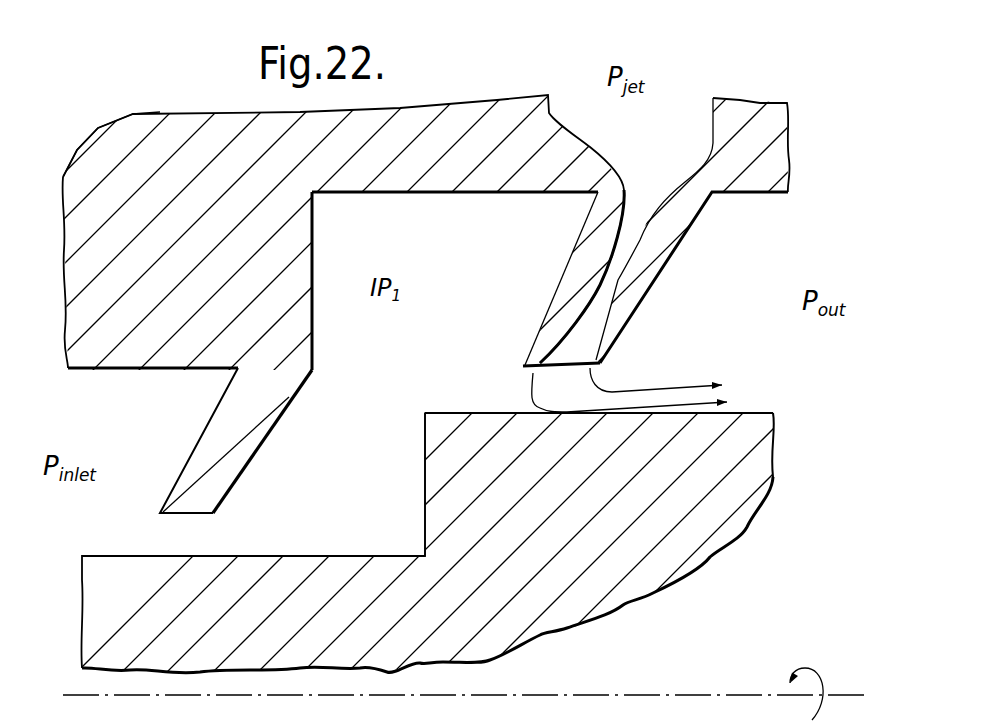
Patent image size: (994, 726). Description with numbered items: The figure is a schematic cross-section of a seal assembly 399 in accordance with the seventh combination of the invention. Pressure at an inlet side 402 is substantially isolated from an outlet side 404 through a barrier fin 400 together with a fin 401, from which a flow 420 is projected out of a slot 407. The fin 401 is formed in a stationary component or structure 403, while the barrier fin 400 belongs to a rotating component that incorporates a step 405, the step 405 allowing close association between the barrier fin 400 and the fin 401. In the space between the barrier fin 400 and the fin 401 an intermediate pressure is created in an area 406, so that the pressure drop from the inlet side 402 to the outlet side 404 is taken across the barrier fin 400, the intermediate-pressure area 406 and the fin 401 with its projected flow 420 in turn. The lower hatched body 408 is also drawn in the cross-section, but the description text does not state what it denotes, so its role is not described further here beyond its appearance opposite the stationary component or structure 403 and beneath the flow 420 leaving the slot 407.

The seal assembly 399 is at (95, 128).
The barrier fin 400 is at (213, 483).
The fin 401 is at (582, 269).
The inlet side 402 is at (109, 423).
The stationary component or structure 403 is at (217, 138).
The outlet side 404 is at (786, 348).
The step 405 is at (423, 520).
The area 406 is at (421, 339).
The slot 407 is at (623, 272).
The lower body 408 is at (653, 563).
The flow 420 is at (662, 394).